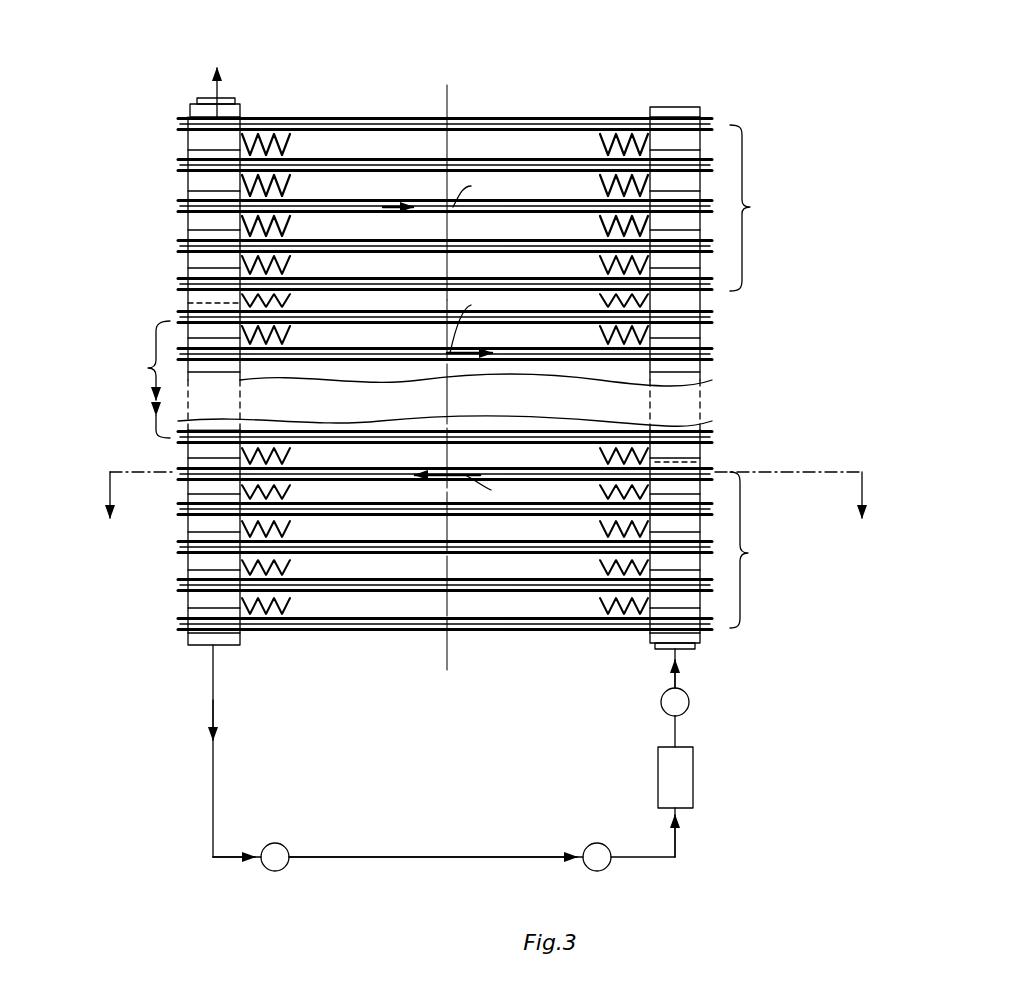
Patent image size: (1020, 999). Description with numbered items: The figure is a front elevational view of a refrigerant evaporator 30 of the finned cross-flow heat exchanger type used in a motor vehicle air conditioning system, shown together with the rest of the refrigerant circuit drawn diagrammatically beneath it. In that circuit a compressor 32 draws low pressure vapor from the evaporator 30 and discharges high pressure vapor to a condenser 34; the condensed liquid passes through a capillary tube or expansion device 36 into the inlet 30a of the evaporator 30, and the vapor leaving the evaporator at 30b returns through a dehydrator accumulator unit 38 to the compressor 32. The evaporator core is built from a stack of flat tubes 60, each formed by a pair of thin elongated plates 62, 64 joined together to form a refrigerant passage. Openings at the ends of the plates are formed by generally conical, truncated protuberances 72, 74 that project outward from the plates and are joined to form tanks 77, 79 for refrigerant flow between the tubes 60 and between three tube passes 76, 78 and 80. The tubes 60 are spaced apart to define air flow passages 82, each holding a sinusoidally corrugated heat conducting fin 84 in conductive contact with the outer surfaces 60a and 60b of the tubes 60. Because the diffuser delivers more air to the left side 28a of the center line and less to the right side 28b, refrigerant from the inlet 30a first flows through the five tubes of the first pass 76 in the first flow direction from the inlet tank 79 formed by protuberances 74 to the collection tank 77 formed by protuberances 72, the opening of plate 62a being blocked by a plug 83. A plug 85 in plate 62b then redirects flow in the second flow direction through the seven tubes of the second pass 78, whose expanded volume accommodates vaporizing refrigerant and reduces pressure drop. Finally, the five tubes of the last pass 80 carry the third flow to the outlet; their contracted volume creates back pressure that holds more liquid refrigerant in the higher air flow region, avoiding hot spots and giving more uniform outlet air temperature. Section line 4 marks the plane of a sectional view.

The refrigerant evaporator 30 is at (470, 106).
The inlet 30a is at (690, 650).
The inlet 30b is at (214, 88).
The compressor 32 is at (598, 845).
The condenser 34 is at (694, 778).
The expansion device 36 is at (689, 705).
The dehydrator accumulator unit 38 is at (277, 845).
The left side of the center line 28a is at (357, 608).
The right side of the center line 28b is at (537, 612).
The flat tubes 60 is at (507, 114).
The outer surface of tube 60a is at (342, 190).
The outer surface of tube 60b is at (403, 173).
The plate 62 is at (255, 113).
The plate 62a is at (288, 470).
The plate 62b is at (292, 272).
The plate 64 is at (318, 127).
The protuberances 72 is at (188, 142).
The protuberances 74 is at (683, 130).
The first pass 76 is at (750, 553).
The collection tank 77 is at (186, 605).
The second pass 78 is at (148, 367).
The inlet tank 79 is at (706, 607).
The last pass 80 is at (752, 207).
The flow passages 82 is at (583, 182).
The plug 83 is at (702, 462).
The heat conducting fin 84 is at (273, 187).
The plug 85 is at (188, 303).
The section line 4- 4 is at (471, 506).